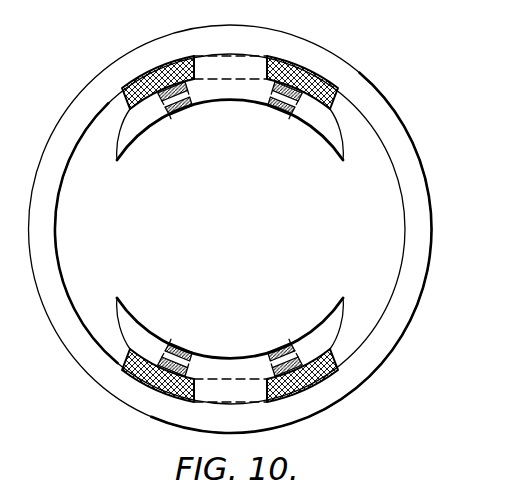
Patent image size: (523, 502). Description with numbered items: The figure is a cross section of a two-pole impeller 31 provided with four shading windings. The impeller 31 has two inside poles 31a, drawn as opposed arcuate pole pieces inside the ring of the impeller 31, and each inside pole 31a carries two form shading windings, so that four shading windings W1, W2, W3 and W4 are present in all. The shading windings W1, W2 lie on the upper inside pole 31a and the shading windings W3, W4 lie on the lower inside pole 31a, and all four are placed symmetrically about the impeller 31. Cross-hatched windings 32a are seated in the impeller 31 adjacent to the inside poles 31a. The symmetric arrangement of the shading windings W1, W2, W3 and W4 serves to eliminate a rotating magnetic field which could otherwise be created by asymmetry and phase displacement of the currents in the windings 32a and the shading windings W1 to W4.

The impeller 31 is at (333, 72).
The inside poles 31a is at (233, 100).
The windings 32a is at (338, 89).
The shading winding W1 is at (286, 113).
The shading winding W2 is at (179, 111).
The shading winding W3 is at (176, 349).
The shading winding W4 is at (282, 350).